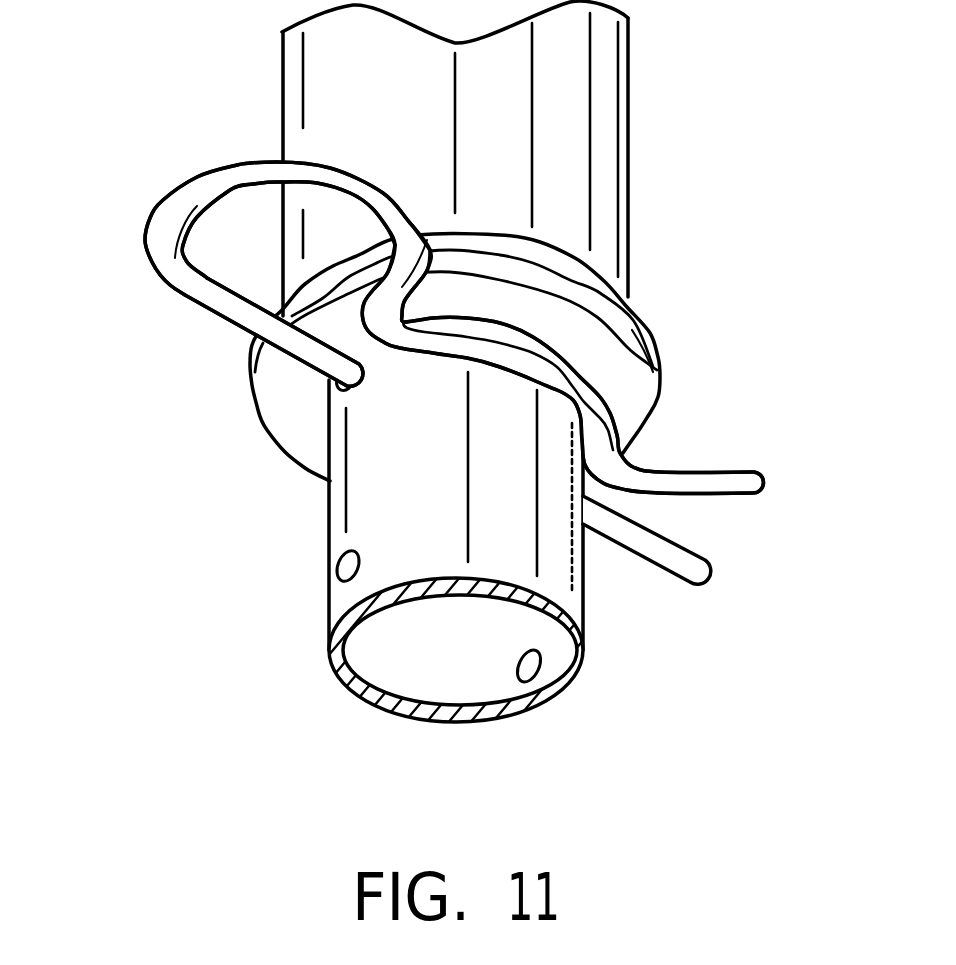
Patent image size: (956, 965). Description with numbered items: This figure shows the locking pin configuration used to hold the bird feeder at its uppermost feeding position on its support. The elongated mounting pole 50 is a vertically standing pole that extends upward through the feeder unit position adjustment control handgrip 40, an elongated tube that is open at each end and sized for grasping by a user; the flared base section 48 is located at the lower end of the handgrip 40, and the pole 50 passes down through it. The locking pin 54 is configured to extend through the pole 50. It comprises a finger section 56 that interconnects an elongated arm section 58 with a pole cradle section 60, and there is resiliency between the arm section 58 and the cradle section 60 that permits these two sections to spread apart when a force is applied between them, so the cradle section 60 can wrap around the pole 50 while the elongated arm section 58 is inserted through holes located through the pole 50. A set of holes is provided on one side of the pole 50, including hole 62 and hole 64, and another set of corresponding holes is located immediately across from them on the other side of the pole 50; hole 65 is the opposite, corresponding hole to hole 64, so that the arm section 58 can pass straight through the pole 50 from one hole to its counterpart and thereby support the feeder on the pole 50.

The feeder unit position adjustment control handgrip 40 is at (565, 115).
The flared base section 48 is at (657, 350).
The elongated mounting pole 50 is at (510, 530).
The locking pin 54 is at (197, 303).
The finger section 56 is at (233, 177).
The elongated arm section 58 is at (660, 553).
The pole cradle section 60 is at (595, 418).
The hole 62 is at (345, 382).
The hole 64 is at (342, 563).
The hole 65 is at (527, 670).